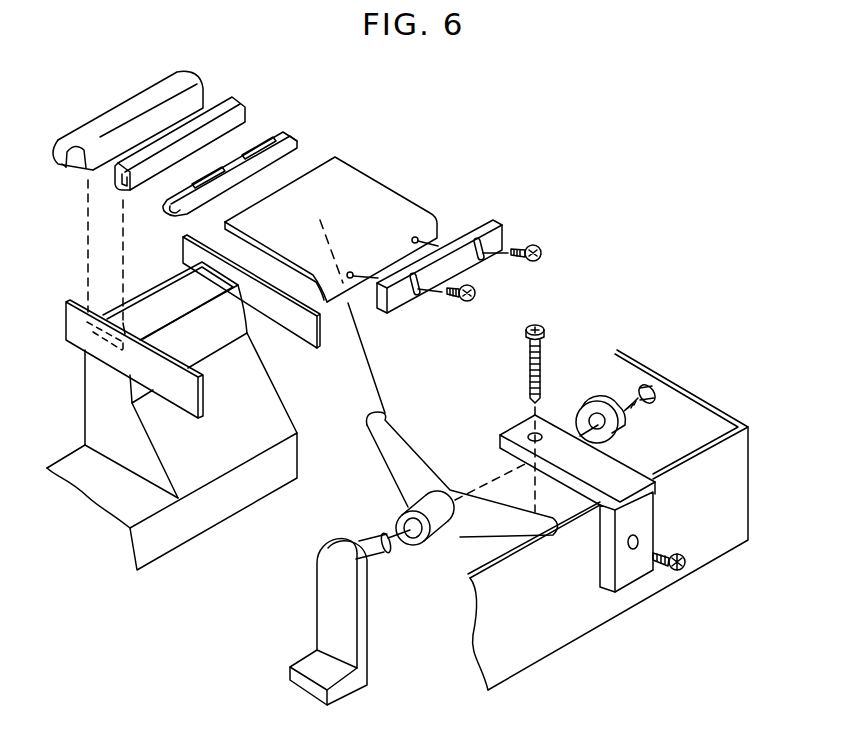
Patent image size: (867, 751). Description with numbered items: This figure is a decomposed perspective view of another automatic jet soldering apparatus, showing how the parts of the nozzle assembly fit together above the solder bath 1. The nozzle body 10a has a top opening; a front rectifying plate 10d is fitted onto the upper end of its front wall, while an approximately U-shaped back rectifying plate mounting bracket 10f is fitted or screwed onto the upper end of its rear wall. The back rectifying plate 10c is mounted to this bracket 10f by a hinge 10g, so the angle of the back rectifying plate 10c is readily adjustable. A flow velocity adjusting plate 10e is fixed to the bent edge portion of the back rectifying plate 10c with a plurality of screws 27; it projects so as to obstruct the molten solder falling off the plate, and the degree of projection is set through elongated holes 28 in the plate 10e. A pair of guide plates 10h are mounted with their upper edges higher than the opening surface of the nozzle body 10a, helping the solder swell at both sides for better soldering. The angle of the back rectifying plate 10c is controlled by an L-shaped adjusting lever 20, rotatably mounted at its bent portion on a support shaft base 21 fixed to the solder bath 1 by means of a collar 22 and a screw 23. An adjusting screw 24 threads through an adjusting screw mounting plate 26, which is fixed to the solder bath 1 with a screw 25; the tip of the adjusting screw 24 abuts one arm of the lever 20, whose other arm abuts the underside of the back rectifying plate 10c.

The solder bath 1 is at (737, 487).
The nozzle body 10a is at (110, 497).
The back rectifying plate 10c is at (380, 205).
The front rectifying plate 10d is at (178, 80).
The flow velocity adjusting plate 10e is at (498, 233).
The back rectifying plate mounting bracket 10f is at (237, 118).
The hinge 10g is at (287, 140).
The guide plates 10h is at (73, 333).
The adjusting lever 20 is at (417, 457).
The support shaft base 21 is at (325, 597).
The collar 22 is at (622, 400).
The screw 23 is at (663, 388).
The adjusting screw 24 is at (547, 331).
The screw 25 is at (686, 566).
The adjusting screw mounting plate 26 is at (625, 568).
The screws 27 is at (480, 292).
The elongated holes 28 is at (488, 203).